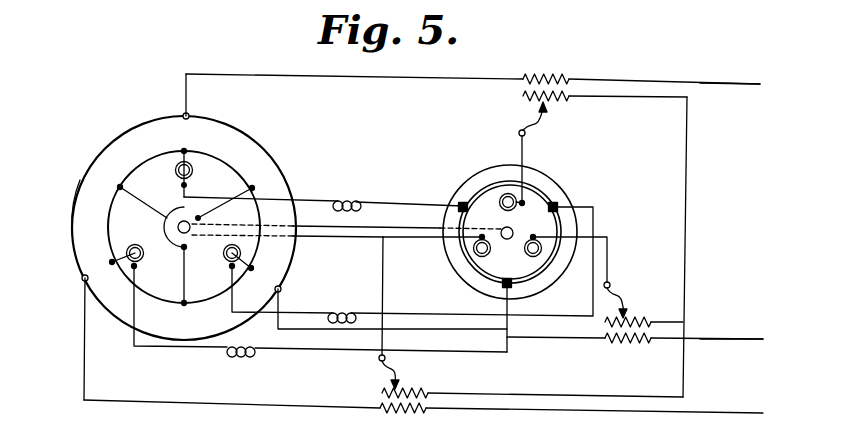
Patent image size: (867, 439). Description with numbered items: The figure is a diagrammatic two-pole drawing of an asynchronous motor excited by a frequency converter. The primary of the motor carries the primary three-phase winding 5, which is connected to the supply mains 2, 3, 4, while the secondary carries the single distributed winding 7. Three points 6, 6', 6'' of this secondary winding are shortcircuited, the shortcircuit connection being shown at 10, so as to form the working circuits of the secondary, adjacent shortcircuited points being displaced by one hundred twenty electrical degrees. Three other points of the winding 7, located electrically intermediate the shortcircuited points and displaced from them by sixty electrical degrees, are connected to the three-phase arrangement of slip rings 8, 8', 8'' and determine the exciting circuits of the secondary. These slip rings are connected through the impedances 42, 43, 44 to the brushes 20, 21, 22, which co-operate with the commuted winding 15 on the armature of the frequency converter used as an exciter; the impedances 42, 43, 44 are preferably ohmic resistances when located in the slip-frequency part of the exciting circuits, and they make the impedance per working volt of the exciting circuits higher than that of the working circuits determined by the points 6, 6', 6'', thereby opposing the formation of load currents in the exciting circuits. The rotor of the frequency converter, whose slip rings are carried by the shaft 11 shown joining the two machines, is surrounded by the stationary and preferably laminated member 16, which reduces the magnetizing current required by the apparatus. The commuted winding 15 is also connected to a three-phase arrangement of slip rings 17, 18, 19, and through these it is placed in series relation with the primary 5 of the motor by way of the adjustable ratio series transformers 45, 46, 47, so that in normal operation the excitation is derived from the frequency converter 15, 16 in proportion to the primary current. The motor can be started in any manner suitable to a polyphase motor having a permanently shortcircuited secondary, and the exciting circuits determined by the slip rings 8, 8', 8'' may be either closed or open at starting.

The main 2 is at (730, 96).
The main 3 is at (731, 352).
The main 4 is at (597, 422).
The primary three-phase winding 5 is at (131, 128).
The shortcircuited point 6 is at (184, 227).
The shortcircuited point 6' is at (133, 197).
The shortcircuited point 6'' is at (185, 288).
The single distributed winding 7 is at (76, 210).
The slip ring 8 is at (191, 173).
The slip ring 8' is at (133, 261).
The slip ring 8'' is at (229, 267).
The shortcircuit connection 10 is at (161, 226).
The shaft 11 is at (345, 234).
The commuted winding 15 is at (478, 277).
The stationary laminated member 16 is at (500, 164).
The slip ring 17 is at (516, 187).
The slip ring 18 is at (443, 255).
The slip ring 19 is at (561, 259).
The commutator brush 20 is at (522, 289).
The commutator brush 21 is at (463, 202).
The commutator brush 22 is at (555, 203).
The impedance 42 is at (347, 193).
The impedance 43 is at (241, 364).
The impedance 44 is at (342, 307).
The adjustable ratio series transformer 45 is at (628, 105).
The adjustable ratio series transformer 46 is at (635, 325).
The adjustable ratio series transformer 47 is at (383, 384).